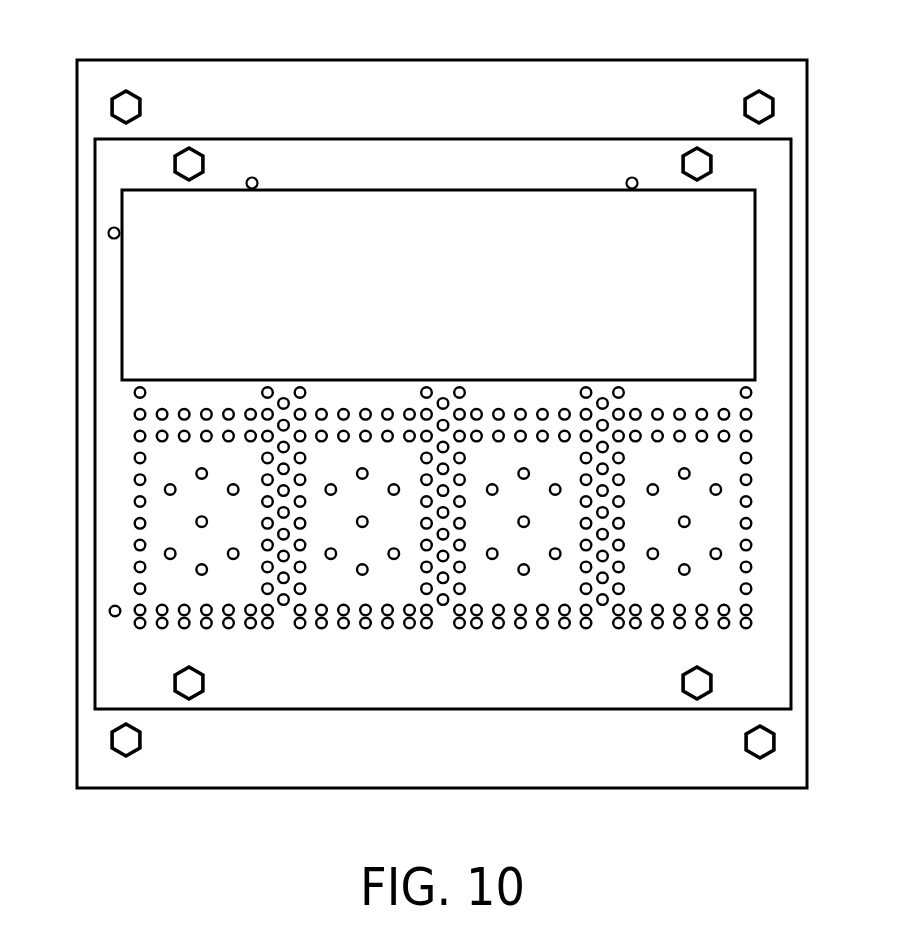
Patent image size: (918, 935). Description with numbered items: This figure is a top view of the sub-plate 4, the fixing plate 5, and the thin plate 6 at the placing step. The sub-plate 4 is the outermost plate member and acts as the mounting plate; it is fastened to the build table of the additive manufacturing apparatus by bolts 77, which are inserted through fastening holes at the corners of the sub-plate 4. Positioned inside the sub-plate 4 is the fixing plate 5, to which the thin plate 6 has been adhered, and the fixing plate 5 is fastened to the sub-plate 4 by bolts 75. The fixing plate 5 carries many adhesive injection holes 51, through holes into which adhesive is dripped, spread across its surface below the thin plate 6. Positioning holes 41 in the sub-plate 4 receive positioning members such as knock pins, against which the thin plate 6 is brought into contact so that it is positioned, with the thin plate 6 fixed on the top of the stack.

The sub-plate 4 is at (113, 68).
The fixing plate 5 is at (107, 419).
The thin plate 6 is at (730, 234).
The positioning hole 41 is at (255, 178).
The adhesive injection hole 51 is at (344, 626).
The bolt 75 is at (195, 163).
The bolt 77 is at (132, 103).